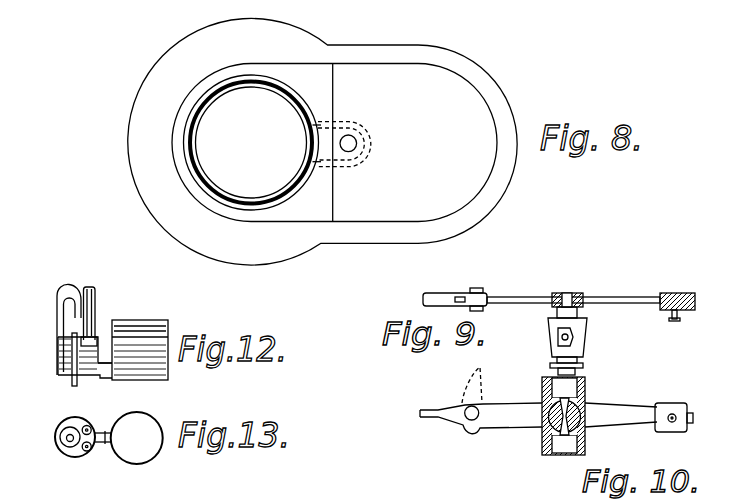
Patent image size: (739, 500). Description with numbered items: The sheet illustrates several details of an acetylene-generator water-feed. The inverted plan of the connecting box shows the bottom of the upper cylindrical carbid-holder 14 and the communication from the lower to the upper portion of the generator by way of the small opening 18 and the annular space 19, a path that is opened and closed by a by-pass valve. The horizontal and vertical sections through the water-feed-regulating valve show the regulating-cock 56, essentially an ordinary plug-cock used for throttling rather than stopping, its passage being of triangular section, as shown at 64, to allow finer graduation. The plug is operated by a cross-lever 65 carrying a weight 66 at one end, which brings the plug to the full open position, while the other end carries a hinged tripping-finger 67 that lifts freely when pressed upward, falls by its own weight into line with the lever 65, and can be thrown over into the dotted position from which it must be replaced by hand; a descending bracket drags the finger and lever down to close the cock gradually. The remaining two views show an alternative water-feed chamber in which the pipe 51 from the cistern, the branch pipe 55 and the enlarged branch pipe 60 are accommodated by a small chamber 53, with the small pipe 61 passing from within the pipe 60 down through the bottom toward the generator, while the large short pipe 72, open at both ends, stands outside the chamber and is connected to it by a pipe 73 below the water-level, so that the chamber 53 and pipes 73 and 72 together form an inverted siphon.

In FIG. 8, the upper cylindrical carbid-holder 14 is at (192, 126).
In FIG. 8, the small opening 18 is at (357, 140).
In FIG. 8, the annular space 19 is at (183, 156).
In FIG. 12, the pipe 51 is at (95, 302).
In FIG. 13, the pipe 51 is at (88, 426).
In FIG. 12, the small closed vessel 53 is at (58, 374).
In FIG. 13, the small closed vessel 53 is at (72, 456).
In FIG. 13, the branch pipe 55 is at (88, 451).
In FIG. 10, the regulating-cock 56 is at (542, 390).
In FIG. 12, the branch pipe 60 is at (58, 318).
In FIG. 13, the branch pipe 60 is at (64, 433).
In FIG. 12, the small pipe 61 is at (72, 384).
In FIG. 13, the small pipe 61 is at (66, 438).
In FIG. 9, the triangular section of plug 64 is at (577, 342).
In FIG. 9, the cross-lever 65 is at (607, 303).
In FIG. 10, the cross-lever 65 is at (608, 411).
In FIG. 10, the weight 66 is at (665, 406).
In FIG. 9, the tripping-finger 67 is at (423, 298).
In FIG. 10, the tripping-finger 67 is at (442, 410).
In FIG. 12, the short pipe 72 is at (157, 328).
In FIG. 13, the short pipe 72 is at (149, 458).
In FIG. 12, the pipe 73 is at (108, 378).
In FIG. 13, the pipe 73 is at (104, 446).